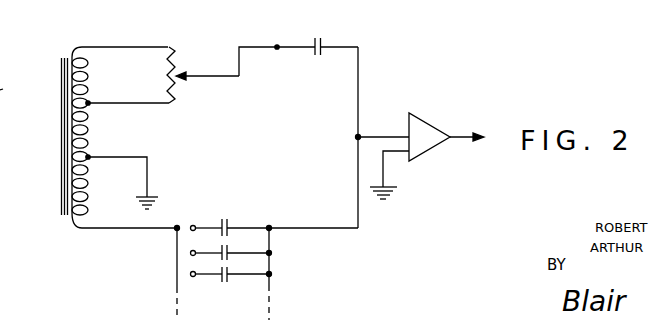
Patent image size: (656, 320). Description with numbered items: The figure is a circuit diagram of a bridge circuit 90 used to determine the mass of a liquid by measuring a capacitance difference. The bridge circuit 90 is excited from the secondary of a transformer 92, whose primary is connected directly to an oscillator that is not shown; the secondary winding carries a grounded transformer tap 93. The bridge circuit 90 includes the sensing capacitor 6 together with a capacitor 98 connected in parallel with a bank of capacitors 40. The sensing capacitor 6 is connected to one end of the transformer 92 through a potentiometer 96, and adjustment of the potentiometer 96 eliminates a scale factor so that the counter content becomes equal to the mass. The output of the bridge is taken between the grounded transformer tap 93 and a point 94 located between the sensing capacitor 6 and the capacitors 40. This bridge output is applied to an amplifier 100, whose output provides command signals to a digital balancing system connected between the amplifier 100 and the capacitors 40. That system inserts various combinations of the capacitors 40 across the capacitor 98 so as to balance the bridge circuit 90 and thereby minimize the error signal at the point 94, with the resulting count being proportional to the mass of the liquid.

The transformer 92 is at (53, 212).
The grounded transformer tap 93 is at (90, 156).
The potentiometer 96 is at (173, 58).
The sensing capacitor 6 is at (318, 35).
The point 94 is at (356, 136).
The bridge circuit 90 is at (241, 154).
The amplifier 100 is at (422, 116).
The capacitor 98 is at (228, 222).
The capacitors 40 is at (228, 246).